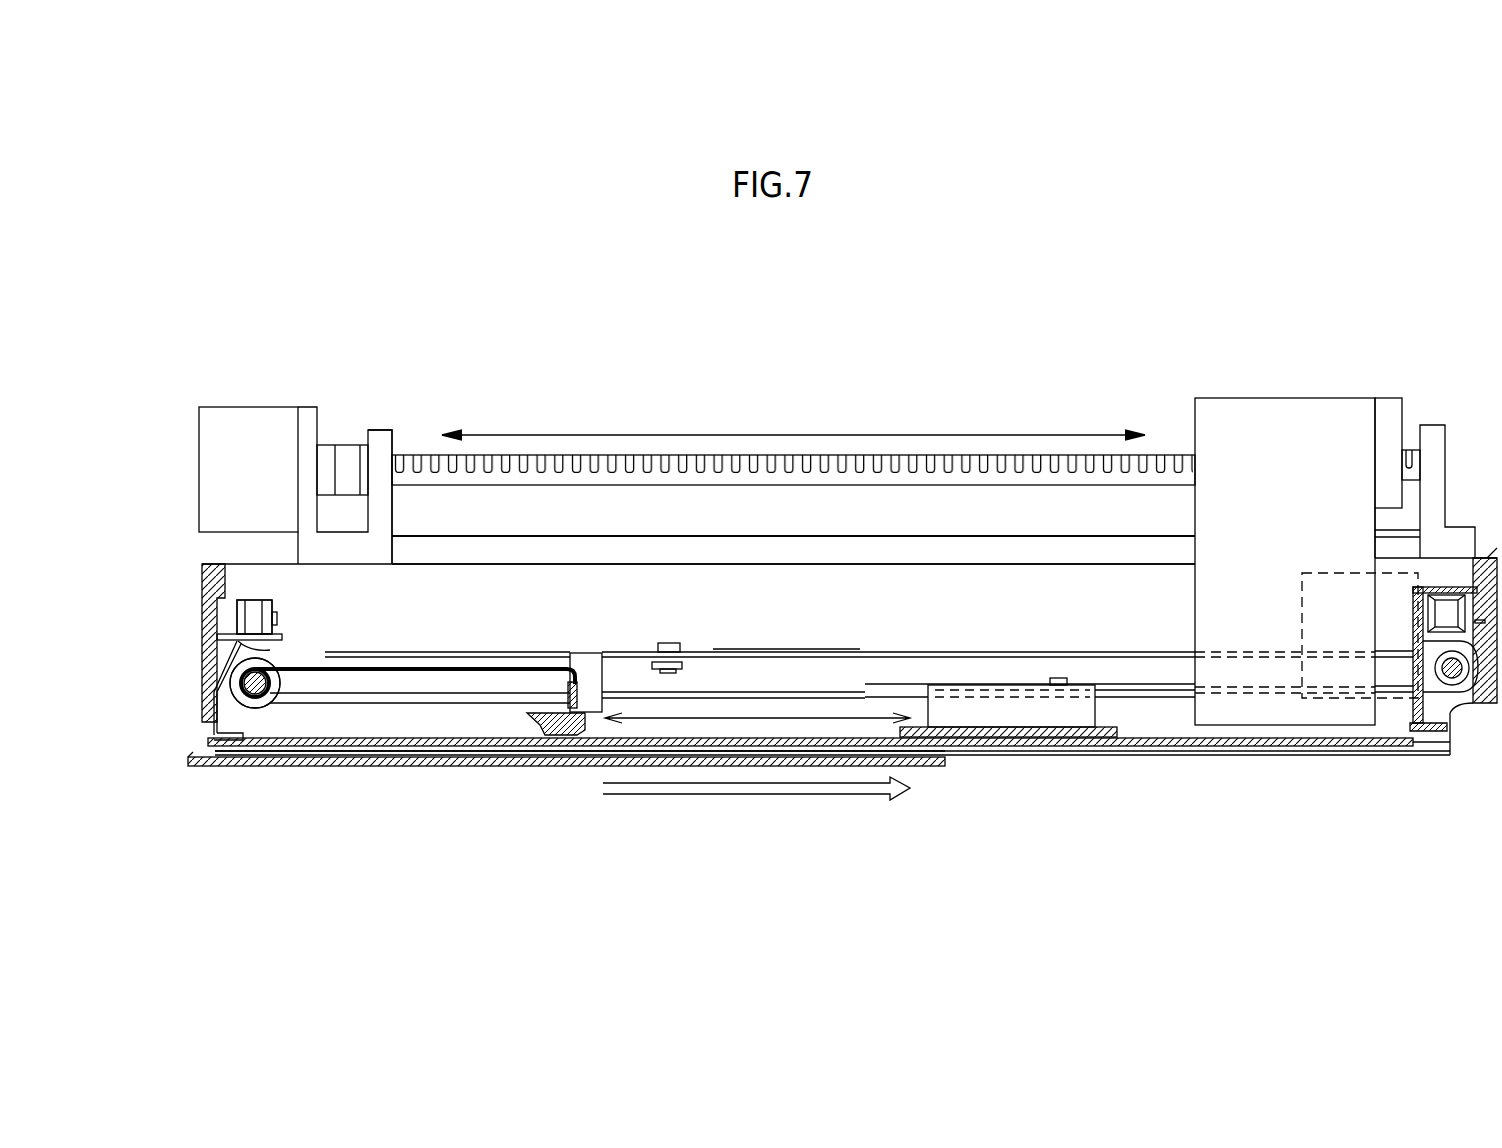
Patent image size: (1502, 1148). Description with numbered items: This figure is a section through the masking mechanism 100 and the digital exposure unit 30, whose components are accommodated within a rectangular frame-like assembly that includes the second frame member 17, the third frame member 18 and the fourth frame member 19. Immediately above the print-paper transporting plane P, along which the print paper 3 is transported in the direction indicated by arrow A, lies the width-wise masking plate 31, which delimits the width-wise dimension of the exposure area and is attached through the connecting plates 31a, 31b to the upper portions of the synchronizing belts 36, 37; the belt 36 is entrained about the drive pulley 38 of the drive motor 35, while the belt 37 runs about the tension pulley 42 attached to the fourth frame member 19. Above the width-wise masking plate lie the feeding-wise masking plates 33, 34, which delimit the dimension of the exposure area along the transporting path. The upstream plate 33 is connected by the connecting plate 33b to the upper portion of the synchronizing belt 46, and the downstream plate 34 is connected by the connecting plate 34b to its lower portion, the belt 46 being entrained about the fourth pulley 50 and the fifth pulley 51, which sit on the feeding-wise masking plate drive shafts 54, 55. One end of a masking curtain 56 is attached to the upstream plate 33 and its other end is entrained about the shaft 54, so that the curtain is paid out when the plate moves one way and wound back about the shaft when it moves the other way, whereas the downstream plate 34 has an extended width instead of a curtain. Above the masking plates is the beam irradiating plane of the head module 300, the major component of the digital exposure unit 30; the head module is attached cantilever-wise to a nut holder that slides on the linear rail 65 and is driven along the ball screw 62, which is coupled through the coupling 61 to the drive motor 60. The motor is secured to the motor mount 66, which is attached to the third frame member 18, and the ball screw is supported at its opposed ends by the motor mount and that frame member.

The masking mechanism 100 is at (429, 272).
The print paper 3 is at (428, 769).
The second frame member 17 is at (1482, 705).
The third frame member 18 is at (945, 562).
The fourth frame member 19 is at (200, 577).
The digital exposure unit 30 is at (1259, 381).
The head module 300 is at (1310, 405).
The width-wise masking plate 31 is at (1148, 747).
The connecting plate 31a is at (1413, 724).
The connecting plate 31b is at (270, 648).
The feeding-wise masking plate 33 is at (557, 736).
The connecting plate 33b is at (592, 653).
The feeding-wise masking plate 34 is at (1048, 737).
The connecting plate 34b is at (967, 710).
The drive motor 35 is at (1302, 605).
The synchronizing belt 36 is at (1452, 587).
The synchronizing belt 37 is at (253, 620).
The drive pulley 38 is at (1443, 617).
The tension pulley 42 is at (253, 622).
The synchronizing belt 46 is at (1107, 653).
The fourth pulley 50 is at (238, 705).
The fifth pulley 51 is at (1445, 693).
The feeding-wise masking plate drive shaft 54 is at (258, 704).
The feeding-wise masking plate drive shaft 55 is at (1433, 670).
The masking curtain 56 is at (480, 670).
The drive motor 60 is at (257, 410).
The coupling 61 is at (347, 452).
The ball screw 62 is at (730, 452).
The linear rail 65 is at (862, 533).
The motor mount 66 is at (386, 432).
The print-paper transporting plane P is at (738, 748).
The feed direction A is at (805, 793).